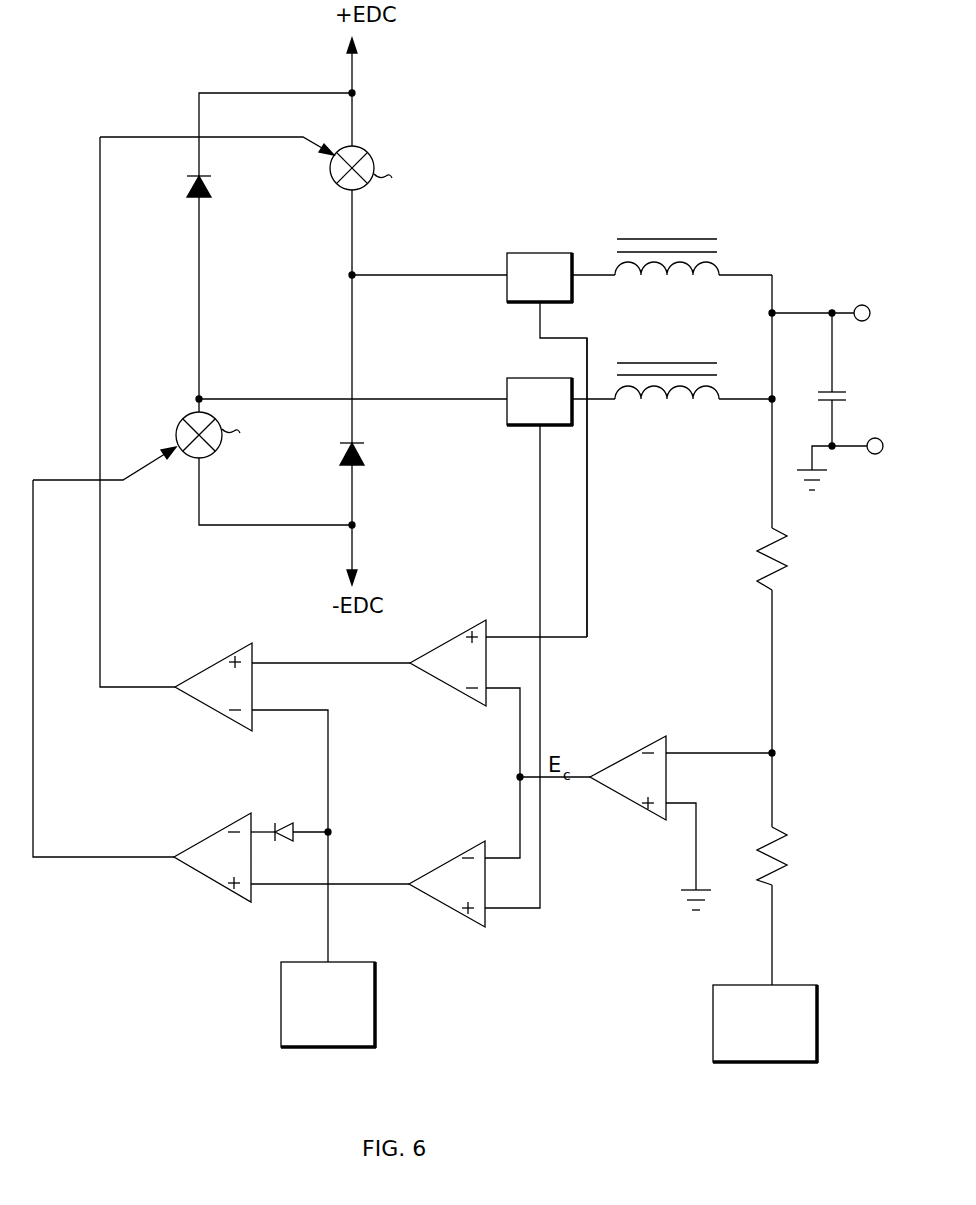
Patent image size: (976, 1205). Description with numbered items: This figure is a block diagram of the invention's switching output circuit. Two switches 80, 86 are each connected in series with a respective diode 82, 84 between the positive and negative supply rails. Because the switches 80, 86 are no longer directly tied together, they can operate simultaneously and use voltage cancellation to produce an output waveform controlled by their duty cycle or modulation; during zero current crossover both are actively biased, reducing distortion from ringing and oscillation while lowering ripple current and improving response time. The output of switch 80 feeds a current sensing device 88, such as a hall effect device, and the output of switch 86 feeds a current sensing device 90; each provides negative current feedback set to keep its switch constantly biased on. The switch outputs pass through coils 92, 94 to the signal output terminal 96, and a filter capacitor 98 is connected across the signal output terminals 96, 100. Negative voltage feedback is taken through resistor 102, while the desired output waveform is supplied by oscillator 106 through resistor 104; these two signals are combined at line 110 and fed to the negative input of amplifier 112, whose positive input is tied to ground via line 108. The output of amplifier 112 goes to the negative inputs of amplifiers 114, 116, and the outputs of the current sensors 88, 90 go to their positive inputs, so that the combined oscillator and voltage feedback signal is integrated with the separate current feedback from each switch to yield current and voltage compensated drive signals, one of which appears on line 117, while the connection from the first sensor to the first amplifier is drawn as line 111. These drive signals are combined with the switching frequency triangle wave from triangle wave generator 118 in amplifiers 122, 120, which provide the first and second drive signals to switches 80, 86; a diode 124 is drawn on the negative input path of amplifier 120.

The switch 80 is at (370, 150).
The diode 82 is at (366, 452).
The diode 84 is at (185, 186).
The switch 86 is at (180, 424).
The current sensing device 88 is at (532, 252).
The current sensing device 90 is at (530, 378).
The coil 92 is at (720, 262).
The coil 94 is at (720, 388).
The signal output terminal 96 is at (854, 305).
The filter capacitor 98 is at (842, 390).
The signal output terminal 100 is at (848, 448).
The resistor 102 is at (782, 552).
The resistor 104 is at (782, 852).
The oscillator 106 is at (742, 985).
The line 108 is at (696, 848).
The line 110 is at (716, 753).
The line 111 is at (587, 535).
The amplifier 112 is at (624, 758).
The amplifier 114 is at (444, 642).
The amplifier 116 is at (425, 898).
The line 117 is at (370, 886).
The triangle wave generator 118 is at (281, 977).
The amplifier 120 is at (226, 888).
The amplifier 122 is at (212, 664).
The diode 124 is at (280, 822).